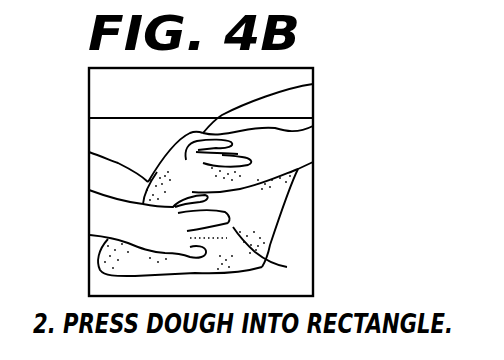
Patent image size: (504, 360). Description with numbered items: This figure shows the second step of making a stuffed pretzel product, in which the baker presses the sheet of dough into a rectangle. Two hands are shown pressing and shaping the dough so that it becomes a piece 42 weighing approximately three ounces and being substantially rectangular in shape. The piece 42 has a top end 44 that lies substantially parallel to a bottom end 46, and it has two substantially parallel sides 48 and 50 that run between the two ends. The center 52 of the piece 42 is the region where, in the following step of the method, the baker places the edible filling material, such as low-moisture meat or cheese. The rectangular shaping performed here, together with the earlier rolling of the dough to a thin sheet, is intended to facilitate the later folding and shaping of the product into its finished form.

The piece 42 is at (262, 223).
The top end 44 is at (313, 84).
The bottom end 46 is at (118, 277).
The side 48 is at (89, 152).
The side 50 is at (285, 193).
The center 52 is at (287, 267).